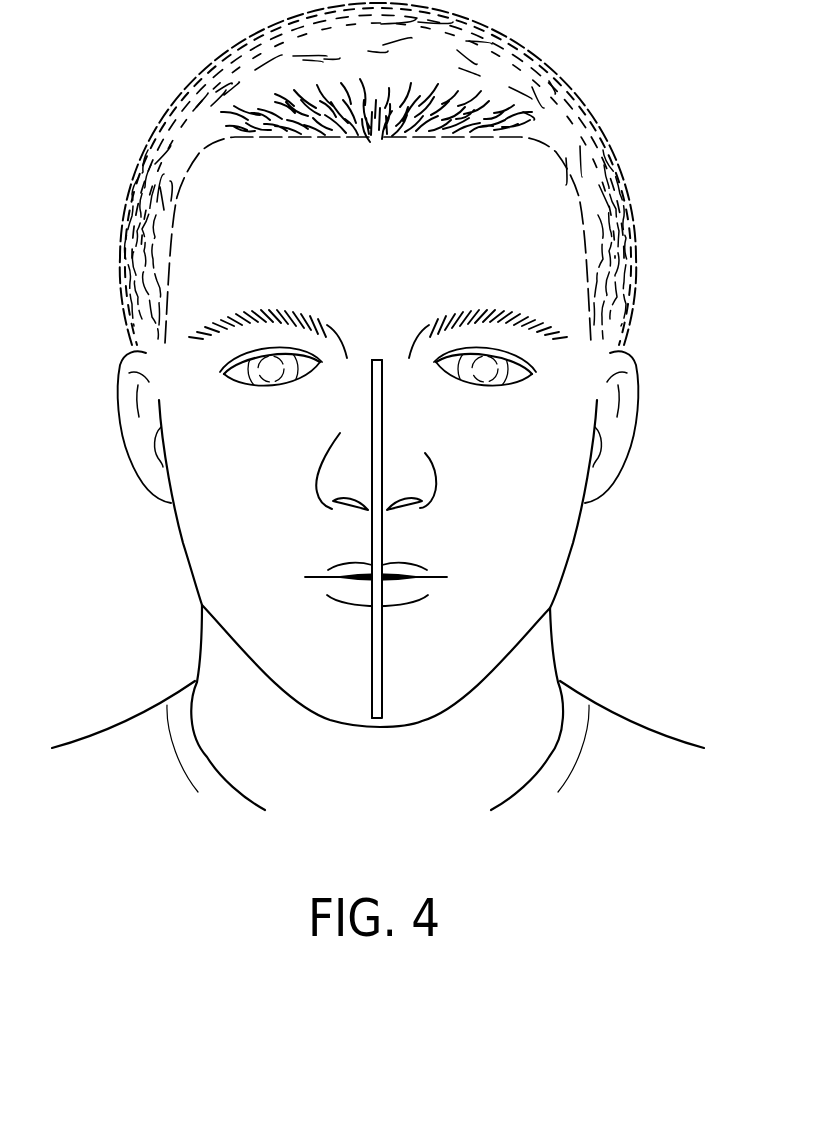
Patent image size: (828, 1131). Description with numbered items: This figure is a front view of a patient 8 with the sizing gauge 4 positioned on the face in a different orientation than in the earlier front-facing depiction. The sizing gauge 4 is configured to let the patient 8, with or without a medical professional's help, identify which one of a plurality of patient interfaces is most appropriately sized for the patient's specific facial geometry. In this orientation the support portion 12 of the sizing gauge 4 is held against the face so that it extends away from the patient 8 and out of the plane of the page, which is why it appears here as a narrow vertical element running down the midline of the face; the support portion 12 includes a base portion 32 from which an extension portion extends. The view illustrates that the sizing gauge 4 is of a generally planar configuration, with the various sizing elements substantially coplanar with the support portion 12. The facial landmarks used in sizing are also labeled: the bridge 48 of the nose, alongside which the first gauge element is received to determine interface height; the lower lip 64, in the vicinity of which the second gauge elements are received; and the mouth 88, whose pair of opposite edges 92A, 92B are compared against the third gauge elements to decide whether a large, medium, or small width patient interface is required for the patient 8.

The patient 8 is at (150, 88).
The sizing gauge 4 is at (358, 411).
The support portion 12 is at (380, 663).
The bridge 48 is at (360, 365).
The base portion 32 is at (377, 448).
The mouth 88 is at (427, 562).
The opposite edge of mouth 92A is at (305, 577).
The opposite edge of mouth 92B is at (450, 574).
The lower lip 64 is at (357, 593).